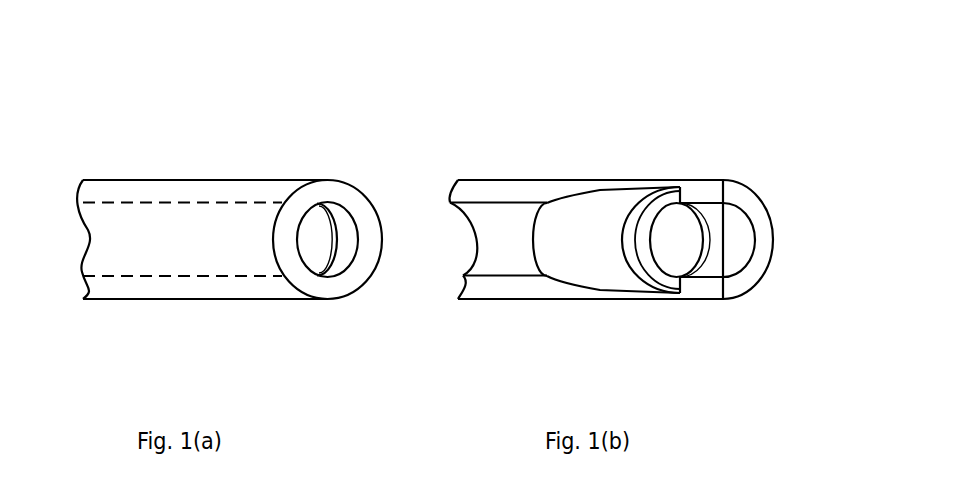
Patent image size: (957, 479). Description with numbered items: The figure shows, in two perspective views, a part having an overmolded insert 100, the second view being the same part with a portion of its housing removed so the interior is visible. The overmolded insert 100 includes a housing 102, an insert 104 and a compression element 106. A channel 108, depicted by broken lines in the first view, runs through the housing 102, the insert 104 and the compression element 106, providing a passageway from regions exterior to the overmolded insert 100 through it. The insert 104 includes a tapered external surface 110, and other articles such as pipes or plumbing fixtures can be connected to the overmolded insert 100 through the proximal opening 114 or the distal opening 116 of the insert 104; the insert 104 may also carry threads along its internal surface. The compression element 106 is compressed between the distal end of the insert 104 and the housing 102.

In FIG. 1A, the overmolded insert 100 is at (222, 90).
In FIG. 1B, the overmolded insert 100 is at (589, 92).
In FIG. 1A, the housing 102 is at (125, 190).
In FIG. 1A, the insert 104 is at (313, 227).
In FIG. 1B, the insert 104 is at (593, 203).
In FIG. 1A, the compression element 106 is at (334, 252).
In FIG. 1B, the compression element 106 is at (705, 253).
In FIG. 1A, the channel 108 is at (62, 239).
In FIG. 1B, the channel 108 is at (453, 238).
In FIG. 1B, the tapered external surface 110 is at (585, 285).
In FIG. 1B, the proximal opening 114 is at (520, 238).
In FIG. 1B, the distal opening 116 is at (683, 238).